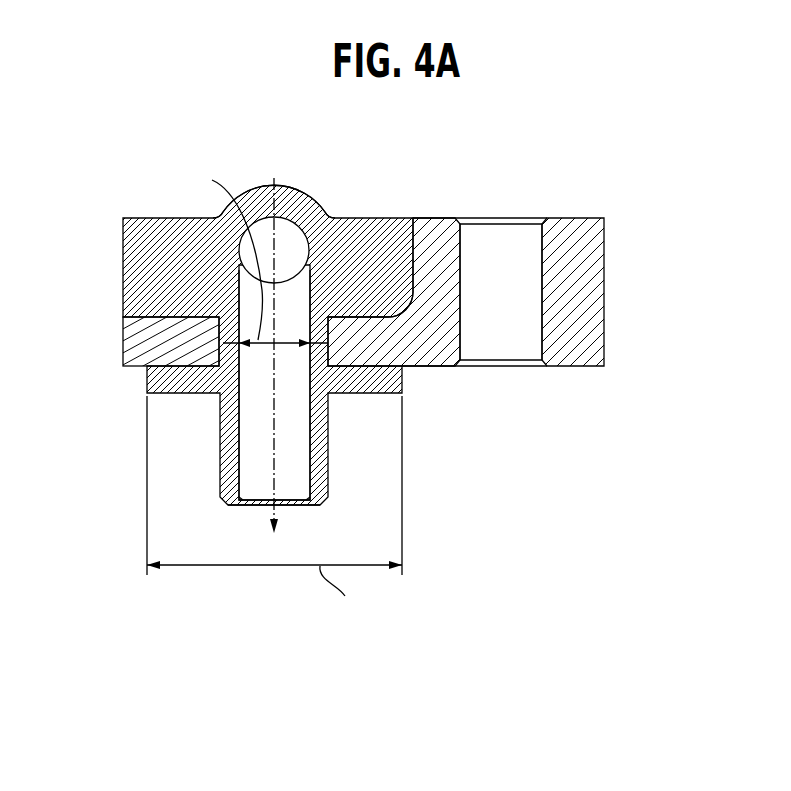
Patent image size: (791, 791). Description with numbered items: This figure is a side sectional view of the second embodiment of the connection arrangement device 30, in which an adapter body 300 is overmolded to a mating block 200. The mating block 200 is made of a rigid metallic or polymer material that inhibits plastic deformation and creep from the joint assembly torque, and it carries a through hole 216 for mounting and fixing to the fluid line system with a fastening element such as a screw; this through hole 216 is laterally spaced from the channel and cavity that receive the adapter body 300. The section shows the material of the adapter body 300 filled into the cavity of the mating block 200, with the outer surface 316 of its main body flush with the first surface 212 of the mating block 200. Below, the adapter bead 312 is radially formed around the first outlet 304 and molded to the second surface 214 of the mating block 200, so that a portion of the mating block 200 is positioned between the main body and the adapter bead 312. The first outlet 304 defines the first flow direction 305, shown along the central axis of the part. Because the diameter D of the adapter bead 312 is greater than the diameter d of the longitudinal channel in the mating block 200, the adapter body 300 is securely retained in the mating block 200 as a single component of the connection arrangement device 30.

The connection arrangement device 30 is at (112, 182).
The adapter body 300 is at (138, 257).
The adapter bead 312 is at (192, 378).
The first flow direction 305 is at (274, 466).
The first outlet 304 is at (304, 514).
The outer surface 316 is at (376, 218).
The first surface 212 is at (433, 218).
The second surface 214 is at (436, 366).
The through hole 216 is at (525, 280).
The mating block 200 is at (604, 332).